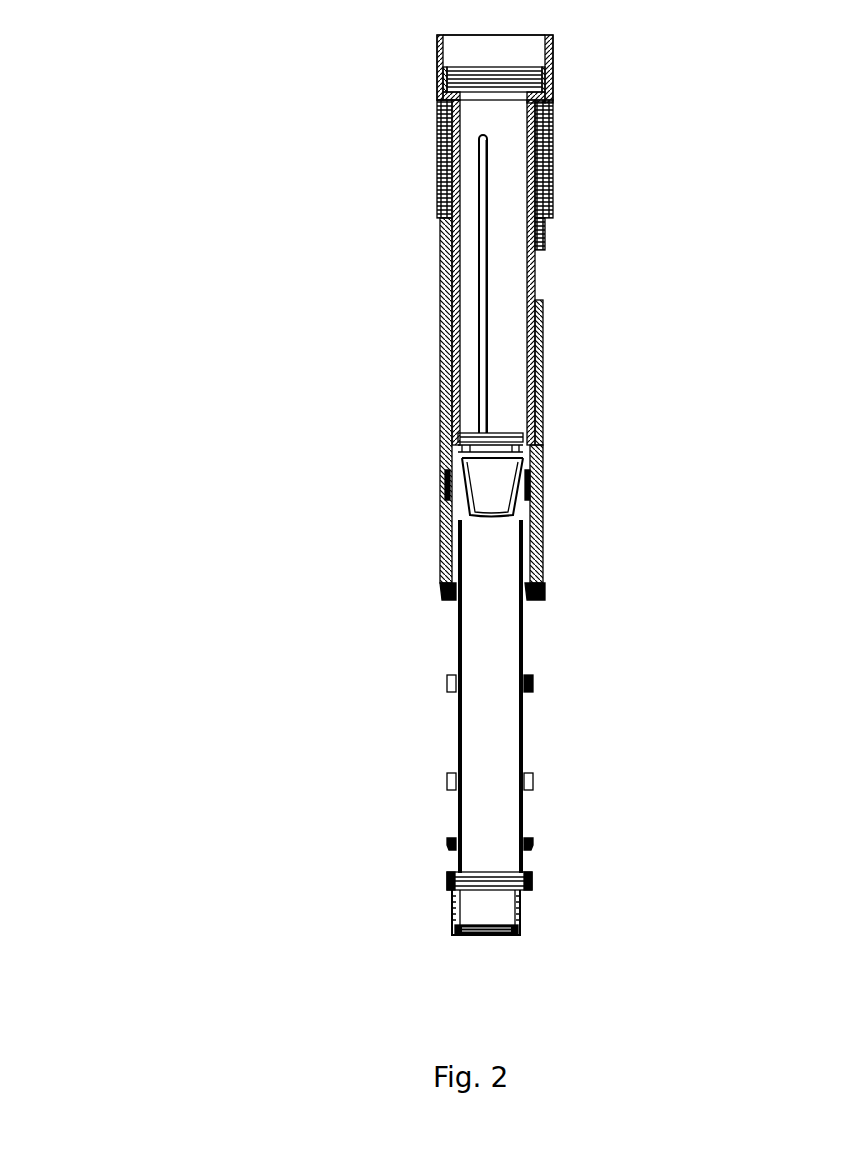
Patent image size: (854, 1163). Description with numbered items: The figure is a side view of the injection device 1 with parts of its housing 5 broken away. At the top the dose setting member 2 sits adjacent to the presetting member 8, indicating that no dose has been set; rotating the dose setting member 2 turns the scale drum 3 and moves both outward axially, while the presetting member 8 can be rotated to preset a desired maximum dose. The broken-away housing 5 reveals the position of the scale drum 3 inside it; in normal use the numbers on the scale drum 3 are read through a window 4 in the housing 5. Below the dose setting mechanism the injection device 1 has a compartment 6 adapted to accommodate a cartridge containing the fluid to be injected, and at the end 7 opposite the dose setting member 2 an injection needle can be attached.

The injection device 1 is at (367, 412).
The dose setting member 2 is at (553, 57).
The scale drum 3 is at (503, 217).
The window 4 is at (543, 268).
The housing 5 is at (545, 390).
The compartment 6 is at (498, 721).
The end 7 is at (497, 940).
The presetting member 8 is at (432, 140).